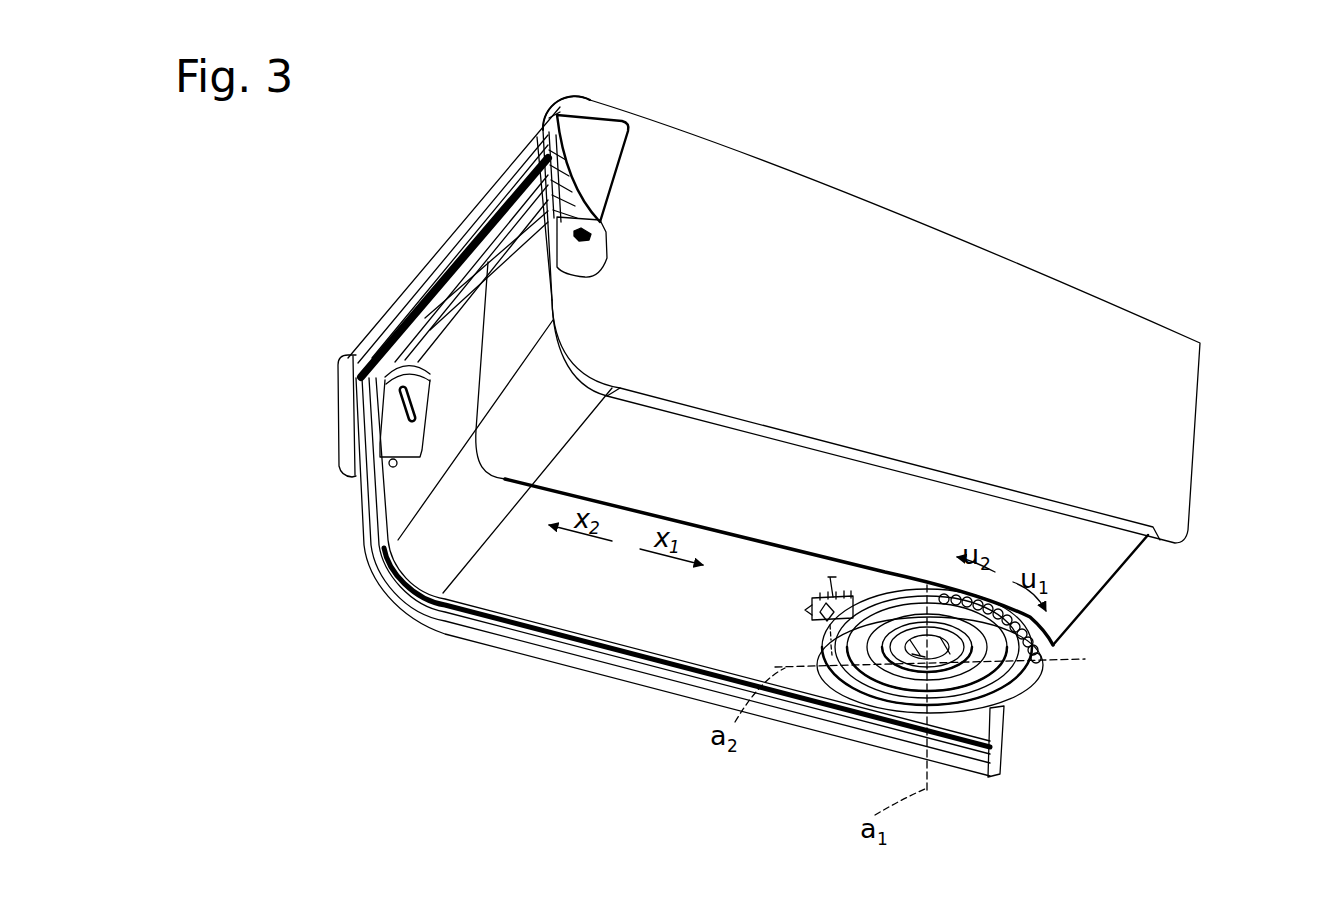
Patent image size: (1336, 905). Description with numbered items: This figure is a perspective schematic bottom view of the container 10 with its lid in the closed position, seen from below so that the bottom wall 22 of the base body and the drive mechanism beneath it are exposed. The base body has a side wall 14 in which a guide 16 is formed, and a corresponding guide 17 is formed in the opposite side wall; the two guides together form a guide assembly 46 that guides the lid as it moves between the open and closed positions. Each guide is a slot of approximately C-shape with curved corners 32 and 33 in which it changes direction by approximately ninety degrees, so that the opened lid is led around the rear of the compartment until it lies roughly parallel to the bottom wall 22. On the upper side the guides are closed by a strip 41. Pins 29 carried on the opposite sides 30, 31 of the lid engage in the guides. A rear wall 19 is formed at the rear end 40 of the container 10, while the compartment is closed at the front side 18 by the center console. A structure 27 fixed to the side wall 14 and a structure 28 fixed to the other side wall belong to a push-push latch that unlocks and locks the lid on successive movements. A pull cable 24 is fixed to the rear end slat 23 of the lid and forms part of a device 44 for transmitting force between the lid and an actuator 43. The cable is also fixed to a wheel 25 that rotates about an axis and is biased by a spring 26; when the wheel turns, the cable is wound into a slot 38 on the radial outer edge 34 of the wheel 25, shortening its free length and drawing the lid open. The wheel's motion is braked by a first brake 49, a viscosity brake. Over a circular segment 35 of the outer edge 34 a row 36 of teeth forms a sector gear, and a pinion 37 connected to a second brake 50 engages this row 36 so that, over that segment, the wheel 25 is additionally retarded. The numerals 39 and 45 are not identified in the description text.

The container 10 is at (1195, 166).
The side wall 14 is at (872, 290).
The guide 16 is at (542, 185).
The guide 17 is at (354, 410).
The front side 18 is at (1208, 443).
The rear wall 19 is at (407, 493).
The bottom wall 22 is at (545, 590).
The rear end slat 23 is at (382, 325).
The pull cable 24 is at (727, 530).
The wheel 25 is at (1020, 688).
The spring 26 is at (902, 690).
The structure 27 is at (582, 255).
The structure 28 is at (376, 365).
The pins 29 is at (548, 132).
The side of the lid 30 is at (553, 95).
The side of the lid 31 is at (345, 338).
The curved corner 32 is at (600, 90).
The curved corner 33 is at (598, 350).
The radial outer edge 34 is at (873, 600).
The circular segment 35 is at (1060, 647).
The row of teeth 36 is at (1043, 640).
The pinion 37 is at (822, 627).
The slot 38 is at (903, 585).
The channel 39 is at (406, 320).
The rear end 40 is at (465, 205).
The strip 41 is at (1005, 765).
The actuator 43 is at (1002, 578).
The device for transmitting force 44 is at (643, 493).
The bearing block 45 is at (386, 413).
The guide assembly 46 is at (345, 457).
The first brake 49 is at (815, 683).
The second brake 50 is at (812, 585).